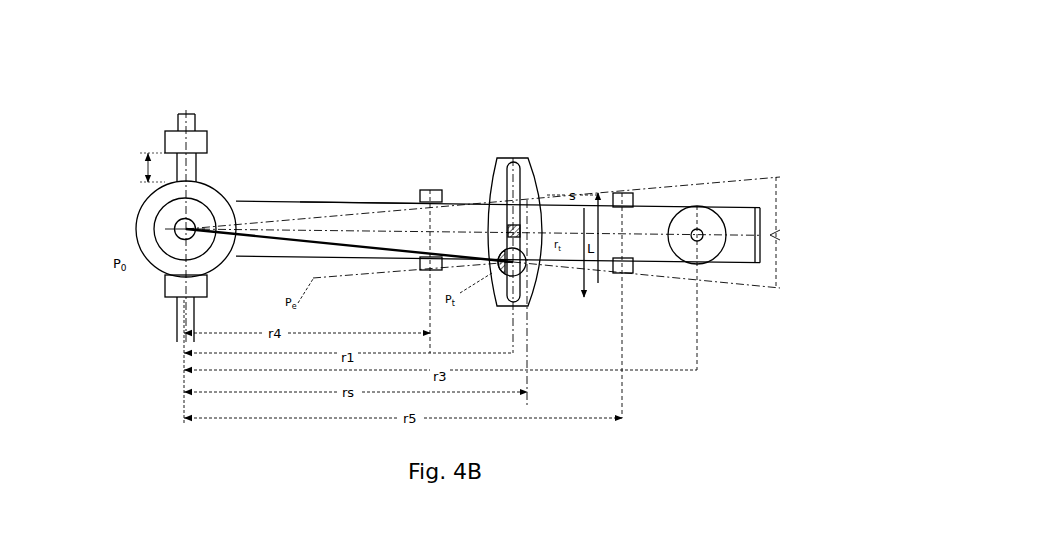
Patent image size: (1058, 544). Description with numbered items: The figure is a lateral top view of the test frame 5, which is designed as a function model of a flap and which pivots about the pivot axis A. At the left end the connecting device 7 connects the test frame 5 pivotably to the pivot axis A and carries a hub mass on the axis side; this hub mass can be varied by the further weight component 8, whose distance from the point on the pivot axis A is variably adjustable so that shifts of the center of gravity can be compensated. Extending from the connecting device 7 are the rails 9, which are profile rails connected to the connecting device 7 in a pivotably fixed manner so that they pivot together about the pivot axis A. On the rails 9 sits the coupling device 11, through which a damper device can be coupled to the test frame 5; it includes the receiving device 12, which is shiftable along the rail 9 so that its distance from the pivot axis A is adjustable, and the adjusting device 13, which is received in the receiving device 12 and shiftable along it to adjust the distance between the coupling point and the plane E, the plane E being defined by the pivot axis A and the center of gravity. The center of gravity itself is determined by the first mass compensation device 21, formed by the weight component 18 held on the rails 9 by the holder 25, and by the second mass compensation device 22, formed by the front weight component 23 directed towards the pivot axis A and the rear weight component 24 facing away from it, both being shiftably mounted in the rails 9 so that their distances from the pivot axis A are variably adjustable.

The test frame 5 is at (260, 98).
The connecting device 7 is at (162, 228).
The further weight component 8 is at (190, 142).
The rails 9 is at (355, 220).
The coupling device 11 is at (561, 256).
The receiving device 12 is at (523, 188).
The adjusting device 13 is at (520, 270).
The weight component 18 is at (702, 253).
The first mass compensation device 21 is at (735, 257).
The second mass compensation device 22 is at (537, 267).
The front weight component 23 is at (425, 268).
The rear weight component 24 is at (630, 192).
The holder 25 is at (702, 230).
The pivot axis A is at (185, 247).
The plane E is at (320, 230).